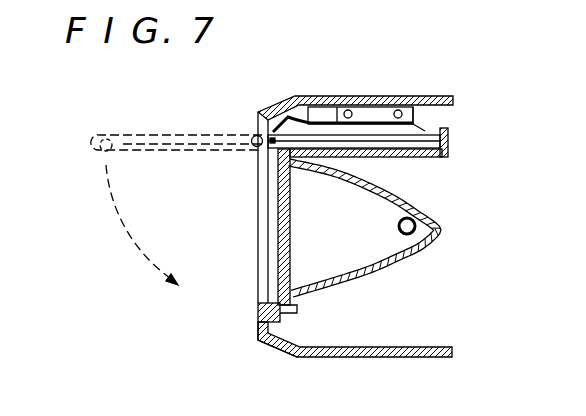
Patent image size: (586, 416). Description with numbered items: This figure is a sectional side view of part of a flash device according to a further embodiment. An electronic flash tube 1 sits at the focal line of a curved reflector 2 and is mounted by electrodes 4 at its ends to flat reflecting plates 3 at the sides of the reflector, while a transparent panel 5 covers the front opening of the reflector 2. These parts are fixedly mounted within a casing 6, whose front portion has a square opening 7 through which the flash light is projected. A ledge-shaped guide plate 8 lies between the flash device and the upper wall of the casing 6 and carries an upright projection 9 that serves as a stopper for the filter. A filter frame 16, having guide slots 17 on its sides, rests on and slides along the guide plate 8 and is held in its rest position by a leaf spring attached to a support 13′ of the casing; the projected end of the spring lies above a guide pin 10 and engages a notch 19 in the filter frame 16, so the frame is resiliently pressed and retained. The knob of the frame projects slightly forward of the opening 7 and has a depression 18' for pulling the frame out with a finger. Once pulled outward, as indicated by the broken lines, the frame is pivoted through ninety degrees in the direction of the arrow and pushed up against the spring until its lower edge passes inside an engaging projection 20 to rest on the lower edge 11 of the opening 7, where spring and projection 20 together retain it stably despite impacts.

The electronic flash tube 1 is at (437, 246).
The curved reflector 2 is at (407, 260).
The flat reflecting plates 3 is at (371, 260).
The electrodes 4 is at (415, 222).
The panel 5 is at (287, 215).
The casing 6 is at (388, 97).
The square opening 7 is at (249, 232).
The guide plate 8 is at (427, 158).
The upright projection 9 is at (449, 150).
The guide pin 10 is at (258, 134).
The lower edge 11 is at (258, 328).
The support 13′ is at (363, 112).
The filter frame 16 is at (424, 130).
The guide slots 17 is at (417, 142).
The depression 18' is at (168, 196).
The notch 19 is at (270, 133).
The engaging projection 20 is at (260, 310).